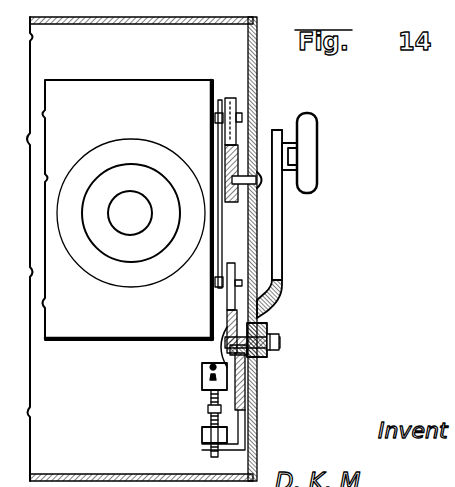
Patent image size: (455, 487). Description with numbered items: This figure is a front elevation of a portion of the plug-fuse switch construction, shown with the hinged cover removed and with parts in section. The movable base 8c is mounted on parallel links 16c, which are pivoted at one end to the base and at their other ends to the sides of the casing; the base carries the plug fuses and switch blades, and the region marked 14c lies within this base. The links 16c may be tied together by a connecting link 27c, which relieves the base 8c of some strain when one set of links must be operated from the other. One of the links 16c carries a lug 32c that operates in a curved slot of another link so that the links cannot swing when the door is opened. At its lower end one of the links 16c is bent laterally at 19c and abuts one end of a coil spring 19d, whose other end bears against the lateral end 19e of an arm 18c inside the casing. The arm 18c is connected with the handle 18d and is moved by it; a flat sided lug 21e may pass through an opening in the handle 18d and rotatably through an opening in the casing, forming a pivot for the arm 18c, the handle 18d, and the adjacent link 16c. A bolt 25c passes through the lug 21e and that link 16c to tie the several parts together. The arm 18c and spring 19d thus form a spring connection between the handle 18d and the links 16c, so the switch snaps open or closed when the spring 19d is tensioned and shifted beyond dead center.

The movable base 8c is at (136, 92).
The dial 14c is at (131, 248).
The parallel links 16c is at (237, 97).
The arm 18c is at (245, 415).
The handle 18d is at (281, 242).
The laterally bent lower end of link 19c is at (201, 371).
The coil spring 19d is at (202, 409).
The lateral end of arm 19e is at (201, 438).
The flat sided lug 21e is at (268, 357).
The bolt 25c is at (283, 342).
The connecting link 27c is at (232, 224).
The lug 32c is at (258, 186).